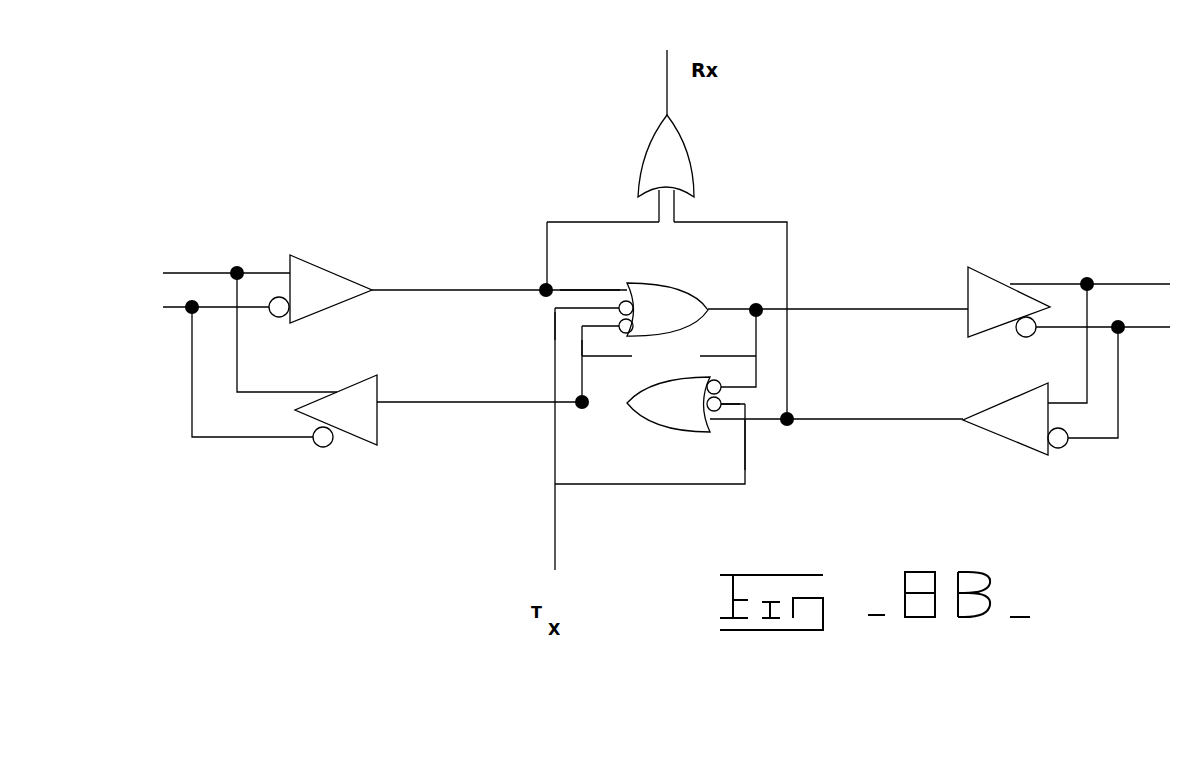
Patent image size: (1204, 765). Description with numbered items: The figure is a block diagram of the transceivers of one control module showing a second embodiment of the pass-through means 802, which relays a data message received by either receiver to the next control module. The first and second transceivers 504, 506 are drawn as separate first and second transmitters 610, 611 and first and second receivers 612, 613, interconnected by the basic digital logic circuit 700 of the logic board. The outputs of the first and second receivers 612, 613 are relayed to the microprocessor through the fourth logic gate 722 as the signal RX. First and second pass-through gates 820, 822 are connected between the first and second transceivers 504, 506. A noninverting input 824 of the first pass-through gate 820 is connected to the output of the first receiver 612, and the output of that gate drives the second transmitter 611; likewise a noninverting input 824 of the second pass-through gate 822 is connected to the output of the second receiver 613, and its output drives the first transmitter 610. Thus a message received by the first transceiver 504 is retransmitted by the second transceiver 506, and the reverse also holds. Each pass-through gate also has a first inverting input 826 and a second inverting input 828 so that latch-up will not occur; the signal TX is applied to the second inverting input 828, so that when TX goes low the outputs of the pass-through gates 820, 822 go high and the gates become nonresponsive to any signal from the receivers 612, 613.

The first transceiver 504 is at (271, 203).
The second transceiver 506 is at (1085, 212).
The digital logic circuit 700 is at (878, 143).
The pass-through means 802 is at (496, 500).
The fourth logic gate 722 is at (643, 155).
The first receiver 612 is at (337, 305).
The first transmitter 610 is at (363, 442).
The second transmitter 611 is at (983, 272).
The second receiver 613 is at (1008, 402).
The first pass-through gate 820 is at (683, 297).
The second pass-through gate 822 is at (677, 428).
The noninverting input 824 is at (605, 292).
The first inverting input 826 is at (770, 443).
The second inverting input 828 is at (553, 321).